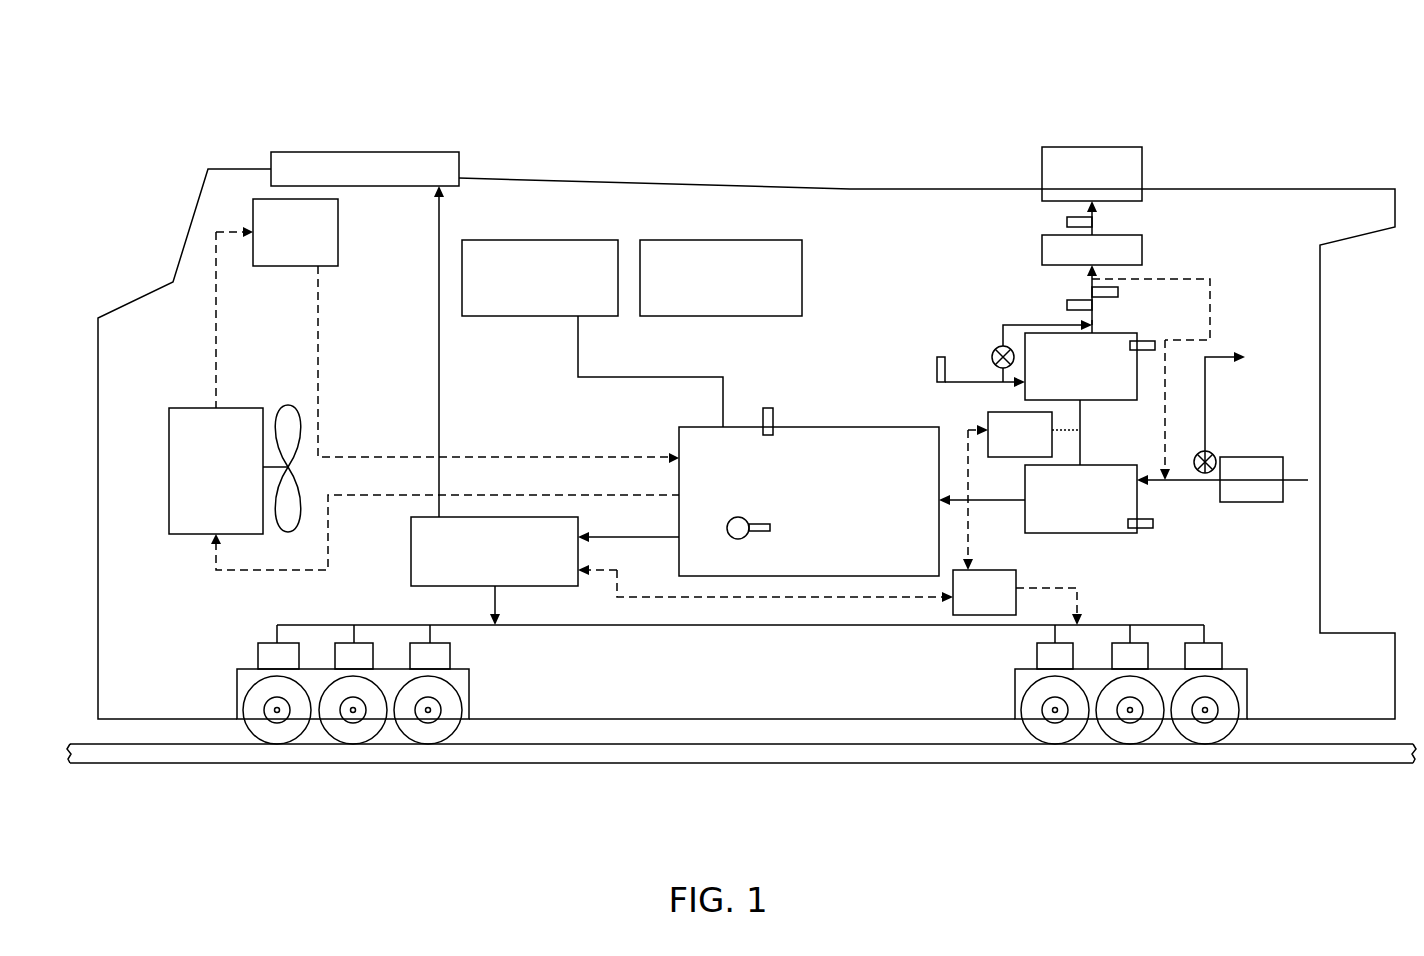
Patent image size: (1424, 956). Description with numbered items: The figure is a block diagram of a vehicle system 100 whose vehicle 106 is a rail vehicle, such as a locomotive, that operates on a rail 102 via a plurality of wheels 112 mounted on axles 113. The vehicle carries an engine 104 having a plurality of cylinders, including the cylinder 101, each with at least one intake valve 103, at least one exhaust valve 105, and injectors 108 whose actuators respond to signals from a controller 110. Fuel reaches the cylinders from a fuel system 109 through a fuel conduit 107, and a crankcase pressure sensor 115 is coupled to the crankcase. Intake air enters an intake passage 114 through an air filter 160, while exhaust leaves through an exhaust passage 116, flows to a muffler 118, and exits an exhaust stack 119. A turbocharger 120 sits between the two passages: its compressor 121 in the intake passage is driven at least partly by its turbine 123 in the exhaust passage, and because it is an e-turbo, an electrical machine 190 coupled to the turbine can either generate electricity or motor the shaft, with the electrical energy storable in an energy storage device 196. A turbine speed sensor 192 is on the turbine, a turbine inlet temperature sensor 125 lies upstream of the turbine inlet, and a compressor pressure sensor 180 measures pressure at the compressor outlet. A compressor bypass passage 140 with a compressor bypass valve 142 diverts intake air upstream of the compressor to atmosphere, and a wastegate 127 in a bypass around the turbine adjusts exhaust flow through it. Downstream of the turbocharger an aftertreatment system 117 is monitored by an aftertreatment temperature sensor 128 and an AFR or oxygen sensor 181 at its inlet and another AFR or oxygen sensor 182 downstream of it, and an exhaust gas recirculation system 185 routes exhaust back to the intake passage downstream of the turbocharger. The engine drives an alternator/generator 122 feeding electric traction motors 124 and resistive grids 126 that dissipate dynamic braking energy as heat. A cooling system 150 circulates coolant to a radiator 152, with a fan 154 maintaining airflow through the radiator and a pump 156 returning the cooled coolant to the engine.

The vehicle system 100 is at (1345, 70).
The cylinder 101 is at (748, 519).
The rail 102 is at (1320, 763).
The intake valve 103 is at (735, 519).
The engine 104 is at (809, 501).
The exhaust valve 105 is at (740, 540).
The vehicle 106 is at (903, 189).
The fuel conduit 107 is at (573, 340).
The injectors 108 is at (770, 532).
The fuel system 109 is at (536, 240).
The controller 110 is at (697, 240).
The wheels 112 is at (455, 698).
The axles 113 is at (1222, 704).
The intake passage 114 is at (1300, 475).
The crankcase pressure sensor 115 is at (770, 408).
The exhaust passage 116 is at (1096, 312).
The aftertreatment system 117 is at (1092, 250).
The muffler 118 is at (1142, 201).
The exhaust stack 119 is at (1092, 174).
The turbocharger 120 is at (1110, 565).
The compressor 121 is at (1081, 499).
The alternator/generator 122 is at (411, 553).
The turbine 123 is at (1081, 399).
The electric traction motors 124 is at (452, 656).
The turbine inlet temperature sensor 125 is at (936, 362).
The resistive grids 126 is at (447, 152).
The wastegate 127 is at (1000, 346).
The aftertreatment temperature sensor 128 is at (1062, 310).
The compressor bypass passage 140 is at (1208, 355).
The compressor bypass valve 142 is at (1192, 465).
The cooling system 150 is at (188, 362).
The radiator 152 is at (424, 401).
The fan 154 is at (292, 405).
The pump 156 is at (447, 331).
The air filter 160 is at (1251, 479).
The compressor pressure sensor 180 is at (1155, 523).
The AFR sensor or O2 sensor 181 is at (1120, 290).
The AFR sensor or O2 sensor 182 is at (1062, 227).
The exhaust gas recirculation system 185 is at (1210, 279).
The electrical machine 190 is at (1024, 434).
The turbine speed sensor 192 is at (1150, 340).
The energy storage device 196 is at (1017, 527).